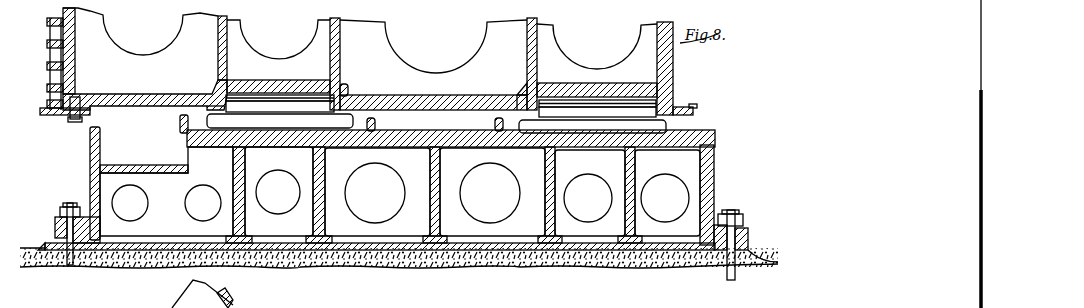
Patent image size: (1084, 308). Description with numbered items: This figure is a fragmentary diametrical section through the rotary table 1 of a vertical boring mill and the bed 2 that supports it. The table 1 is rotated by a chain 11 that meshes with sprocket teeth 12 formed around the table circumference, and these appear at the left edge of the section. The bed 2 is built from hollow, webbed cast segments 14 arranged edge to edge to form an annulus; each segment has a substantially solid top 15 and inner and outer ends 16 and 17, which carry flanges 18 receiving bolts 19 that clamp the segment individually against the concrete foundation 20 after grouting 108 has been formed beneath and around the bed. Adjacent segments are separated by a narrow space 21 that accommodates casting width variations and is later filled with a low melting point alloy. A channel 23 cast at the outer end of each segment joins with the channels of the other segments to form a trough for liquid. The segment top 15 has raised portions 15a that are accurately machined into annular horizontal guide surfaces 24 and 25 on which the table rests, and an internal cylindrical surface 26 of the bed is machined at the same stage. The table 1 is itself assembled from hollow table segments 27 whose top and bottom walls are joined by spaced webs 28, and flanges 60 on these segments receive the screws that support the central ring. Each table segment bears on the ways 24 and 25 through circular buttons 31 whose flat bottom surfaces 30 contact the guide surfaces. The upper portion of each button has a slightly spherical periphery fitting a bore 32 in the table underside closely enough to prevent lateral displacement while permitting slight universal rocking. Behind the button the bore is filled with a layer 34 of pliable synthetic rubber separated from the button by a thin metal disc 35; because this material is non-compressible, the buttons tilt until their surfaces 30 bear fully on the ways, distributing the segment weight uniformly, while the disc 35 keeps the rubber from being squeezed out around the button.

The table 1 is at (591, 65).
The bed 2 is at (370, 235).
The chain 11 is at (50, 42).
The sprocket teeth 12 is at (65, 78).
The segments 14 is at (543, 255).
The top 15 is at (218, 140).
The raised portions 15a is at (492, 127).
The inner end 16 is at (712, 190).
The outer end 17 is at (90, 180).
The flanges 18 is at (88, 263).
The bolts 19 is at (70, 262).
The concrete foundation 20 is at (183, 262).
The space 21 is at (156, 306).
The channel 23 is at (140, 147).
The guide surface 24 is at (290, 143).
The guide surface 25 is at (584, 141).
The internal cylindrical surface 26 is at (714, 168).
The table segments 27 is at (488, 76).
The webs 28 is at (218, 52).
The bottom surfaces 30 is at (310, 128).
The buttons 31 is at (247, 116).
The bore 32 is at (342, 90).
The layer 34 is at (278, 98).
The disc 35 is at (228, 95).
The flanges 60 is at (695, 108).
The grouting 108 is at (500, 258).